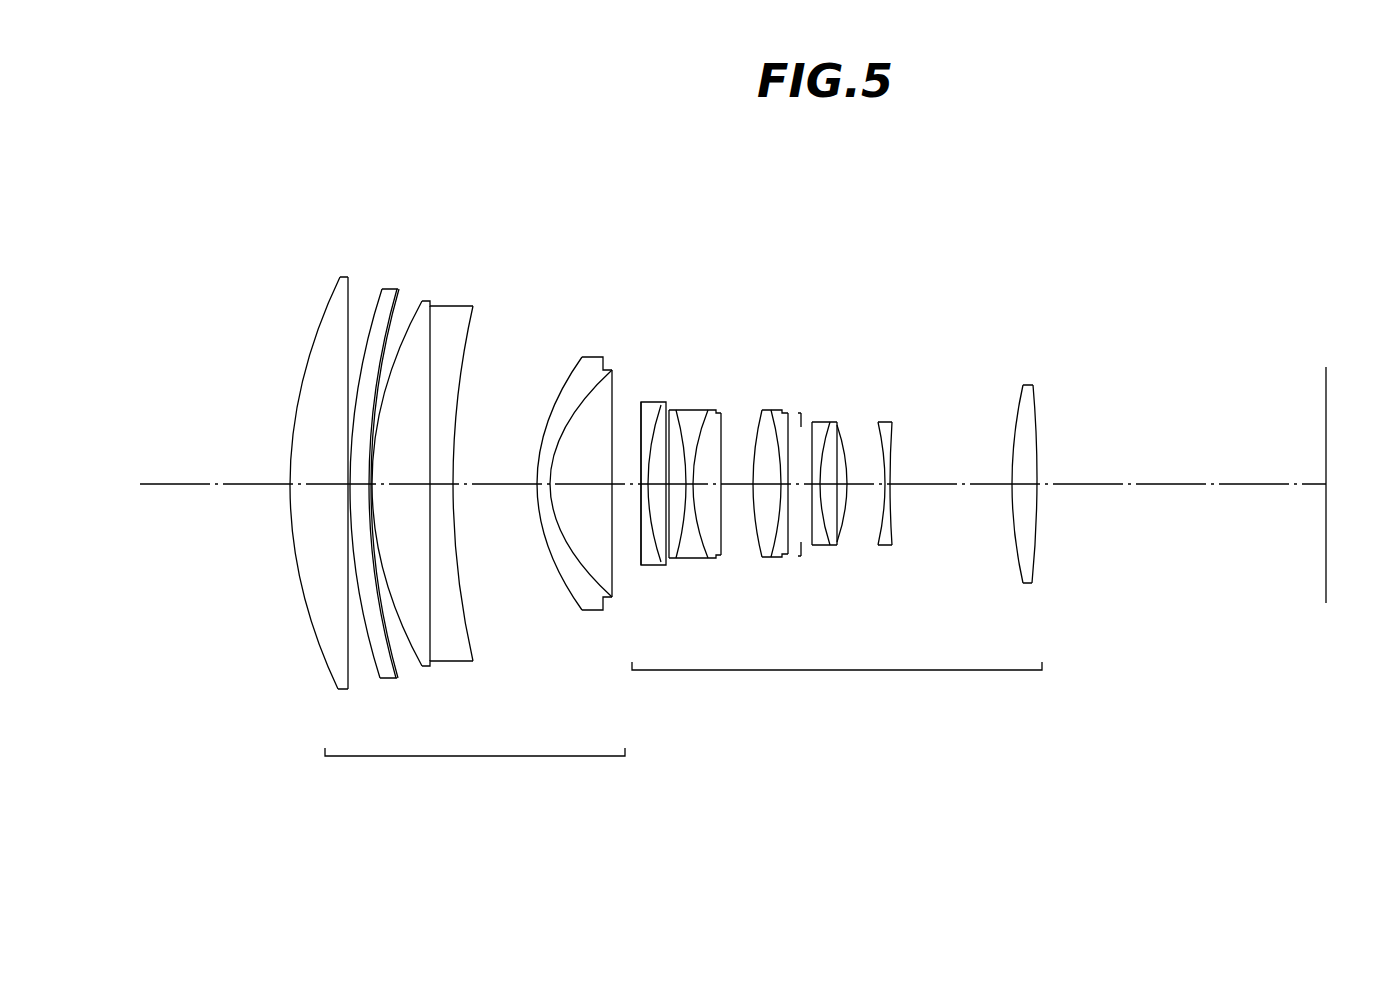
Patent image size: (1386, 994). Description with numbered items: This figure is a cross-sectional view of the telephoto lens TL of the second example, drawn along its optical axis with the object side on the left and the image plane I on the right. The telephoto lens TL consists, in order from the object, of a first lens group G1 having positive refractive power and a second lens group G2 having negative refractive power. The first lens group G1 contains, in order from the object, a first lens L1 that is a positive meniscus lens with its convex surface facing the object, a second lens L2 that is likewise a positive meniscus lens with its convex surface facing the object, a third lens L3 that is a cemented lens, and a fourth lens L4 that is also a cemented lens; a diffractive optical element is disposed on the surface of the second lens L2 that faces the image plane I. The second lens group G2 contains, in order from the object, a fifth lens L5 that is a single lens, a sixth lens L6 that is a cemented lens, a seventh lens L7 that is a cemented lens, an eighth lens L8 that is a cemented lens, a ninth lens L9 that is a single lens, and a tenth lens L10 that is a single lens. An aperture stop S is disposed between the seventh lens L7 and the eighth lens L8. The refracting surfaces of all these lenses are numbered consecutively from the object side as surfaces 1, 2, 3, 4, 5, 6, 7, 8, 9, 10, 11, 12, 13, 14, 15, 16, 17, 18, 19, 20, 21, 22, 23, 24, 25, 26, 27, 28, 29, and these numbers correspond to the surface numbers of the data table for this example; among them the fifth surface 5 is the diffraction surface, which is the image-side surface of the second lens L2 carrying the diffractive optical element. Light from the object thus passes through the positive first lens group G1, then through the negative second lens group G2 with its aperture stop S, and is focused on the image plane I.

The first surface 1 is at (333, 288).
The second surface 2 is at (351, 278).
The third surface 3 is at (383, 291).
The fourth surface 4 is at (396, 292).
The fifth surface 5 is at (388, 352).
The sixth surface 6 is at (424, 302).
The seventh surface 7 is at (430, 301).
The eighth surface 8 is at (432, 318).
The ninth surface 9 is at (473, 336).
The tenth surface 10 is at (568, 372).
The eleventh surface 11 is at (592, 378).
The twelfth surface 12 is at (615, 372).
The thirteenth surface 13 is at (642, 403).
The fourteenth surface 14 is at (658, 408).
The fifteenth surface 15 is at (668, 410).
The sixteenth surface 16 is at (679, 413).
The seventeenth surface 17 is at (705, 411).
The eighteenth surface 18 is at (721, 425).
The nineteenth surface 19 is at (761, 412).
The twentieth surface 20 is at (772, 414).
The twenty-first surface 21 is at (788, 418).
The twenty-second surface 22 is at (813, 423).
The twenty-third surface 23 is at (828, 428).
The twenty-fourth surface 24 is at (838, 432).
The twenty-fifth surface 25 is at (845, 438).
The twenty-sixth surface 26 is at (879, 425).
The twenty-seventh surface 27 is at (893, 432).
The twenty-eighth surface 28 is at (1022, 392).
The twenty-ninth surface 29 is at (1036, 400).
The first lens L1 is at (325, 478).
The second lens L2 is at (379, 478).
The third lens L3 is at (435, 478).
The fourth lens L4 is at (578, 515).
The fifth lens L5 is at (645, 483).
The sixth lens L6 is at (708, 483).
The seventh lens L7 is at (774, 473).
The eighth lens L8 is at (840, 474).
The ninth lens L9 is at (896, 493).
The tenth lens L10 is at (1032, 487).
The first lens group G1 is at (475, 766).
The second lens group G2 is at (837, 682).
The aperture stop S is at (801, 557).
The image plane I is at (1328, 381).
The telephoto lens TL is at (1181, 237).